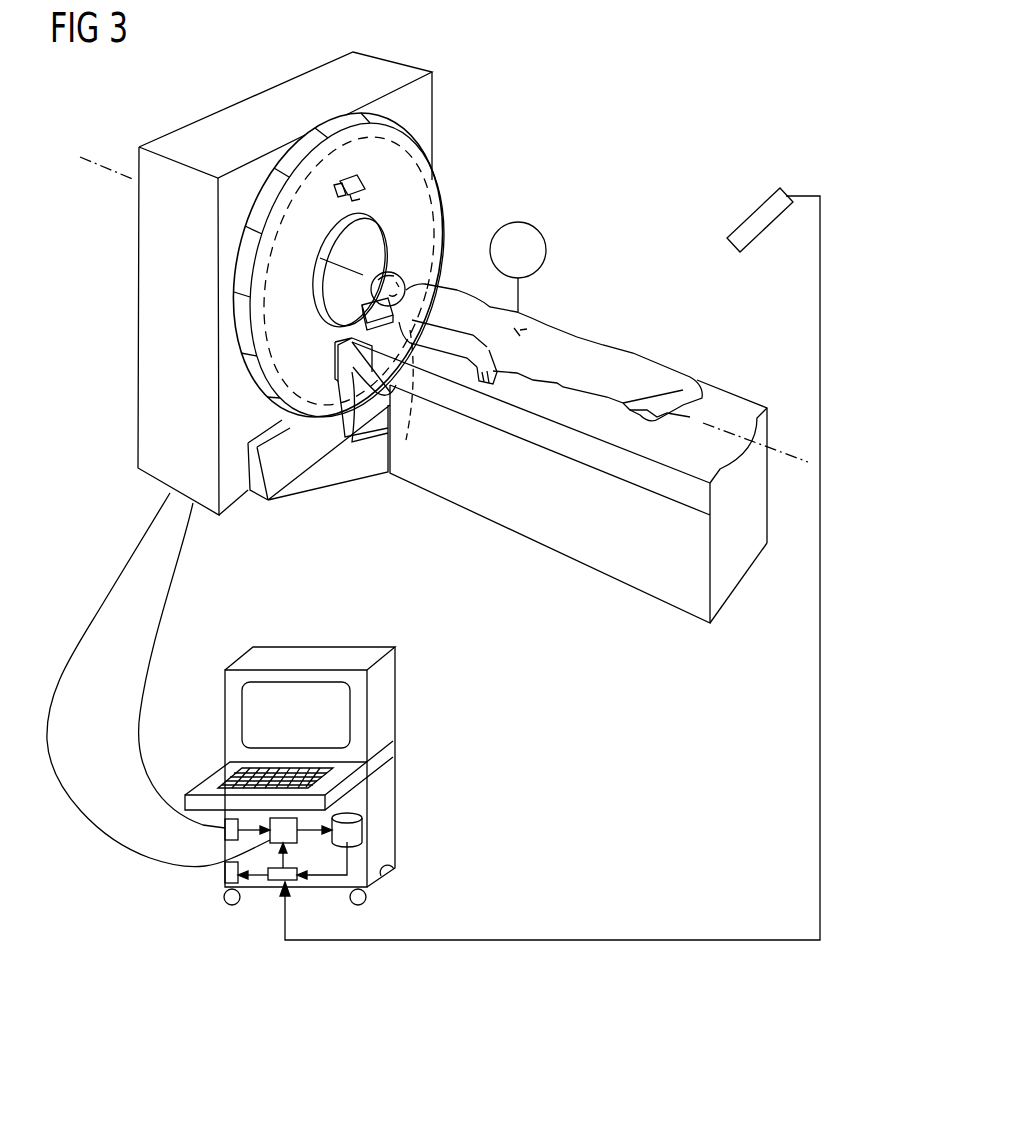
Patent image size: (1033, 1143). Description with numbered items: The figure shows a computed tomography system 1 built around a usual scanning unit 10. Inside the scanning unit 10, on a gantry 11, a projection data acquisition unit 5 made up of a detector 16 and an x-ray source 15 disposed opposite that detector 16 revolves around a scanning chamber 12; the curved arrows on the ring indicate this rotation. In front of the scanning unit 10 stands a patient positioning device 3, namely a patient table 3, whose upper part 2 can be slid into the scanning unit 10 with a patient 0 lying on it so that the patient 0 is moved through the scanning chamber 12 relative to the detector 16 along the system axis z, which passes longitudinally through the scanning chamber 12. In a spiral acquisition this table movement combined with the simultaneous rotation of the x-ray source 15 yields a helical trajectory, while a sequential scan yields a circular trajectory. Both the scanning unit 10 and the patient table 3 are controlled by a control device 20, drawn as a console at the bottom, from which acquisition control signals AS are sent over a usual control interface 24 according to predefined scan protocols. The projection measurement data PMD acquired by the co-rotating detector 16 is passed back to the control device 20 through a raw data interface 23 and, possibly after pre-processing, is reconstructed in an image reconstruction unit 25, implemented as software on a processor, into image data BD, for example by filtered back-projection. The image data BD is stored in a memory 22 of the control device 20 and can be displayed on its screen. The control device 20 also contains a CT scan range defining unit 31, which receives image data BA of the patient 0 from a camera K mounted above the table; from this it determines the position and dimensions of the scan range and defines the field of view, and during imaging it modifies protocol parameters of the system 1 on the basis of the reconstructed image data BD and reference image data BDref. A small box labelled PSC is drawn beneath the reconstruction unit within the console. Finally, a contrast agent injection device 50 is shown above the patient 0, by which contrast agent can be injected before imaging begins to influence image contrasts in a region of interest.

The computed tomography system 1 is at (600, 196).
The patient 0 is at (550, 333).
The upper part 2 is at (697, 385).
The patient positioning device 3 is at (508, 520).
The projection data acquisition unit 5 is at (326, 163).
The scanning unit 10 is at (157, 478).
The gantry 11 is at (435, 188).
The scanning chamber 12 is at (345, 253).
The x-ray source 15 is at (368, 184).
The detector 16 is at (350, 386).
The control device 20 is at (323, 630).
The memory 22 is at (362, 828).
The raw data interface 23 is at (225, 838).
The control interface 24 is at (225, 875).
The image reconstruction unit 25 is at (205, 866).
The CT scan range defining unit 31 is at (284, 893).
The contrast agent injection device 50 is at (518, 222).
The camera K is at (752, 210).
The system axis z is at (790, 452).
The acquisition control signals AS is at (103, 597).
The projection measurement data PMD is at (181, 558).
The image data BD is at (300, 834).
The reference image data BDref is at (348, 862).
The image data BA is at (553, 940).
The scan control PSC is at (262, 887).